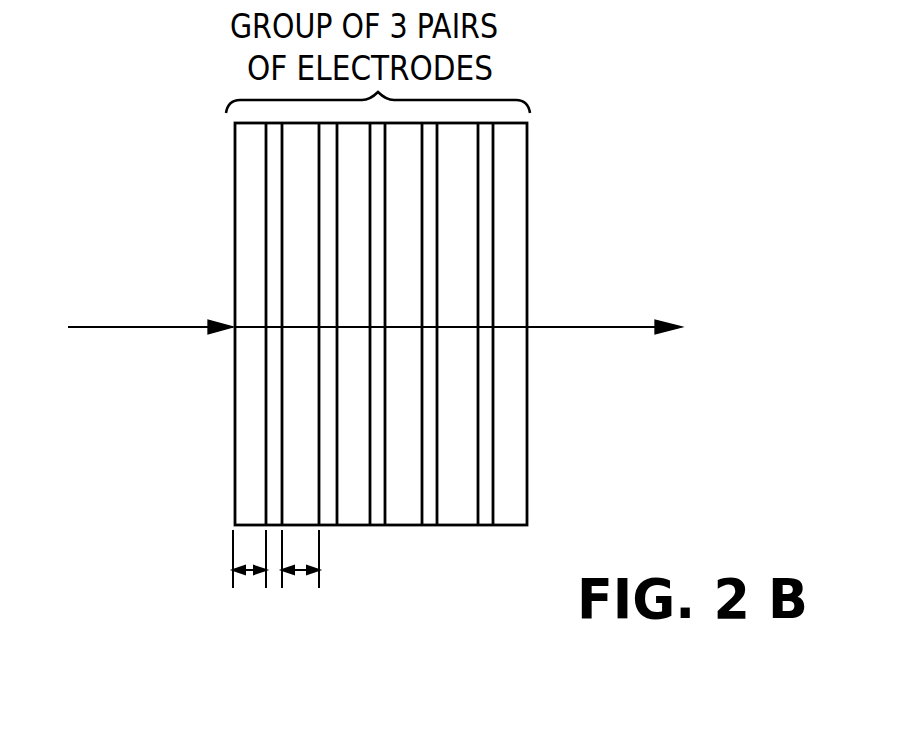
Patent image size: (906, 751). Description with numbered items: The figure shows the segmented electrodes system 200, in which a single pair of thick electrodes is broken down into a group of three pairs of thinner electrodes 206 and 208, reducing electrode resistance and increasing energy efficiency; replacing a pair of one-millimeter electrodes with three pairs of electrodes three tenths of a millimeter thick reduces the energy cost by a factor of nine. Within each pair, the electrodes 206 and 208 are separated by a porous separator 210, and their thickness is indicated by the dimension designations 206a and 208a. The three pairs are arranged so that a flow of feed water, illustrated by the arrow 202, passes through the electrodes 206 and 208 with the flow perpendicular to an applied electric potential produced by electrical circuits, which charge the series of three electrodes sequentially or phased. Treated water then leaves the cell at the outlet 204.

The segmented electrodes system 200 is at (145, 105).
The arrow 202 is at (138, 327).
The outlet 204 is at (607, 322).
The electrode 206 is at (248, 450).
The electrode 208 is at (297, 470).
The porous separator 210 is at (330, 205).
The dimension designation 206a is at (254, 577).
The dimension designation 208a is at (305, 577).